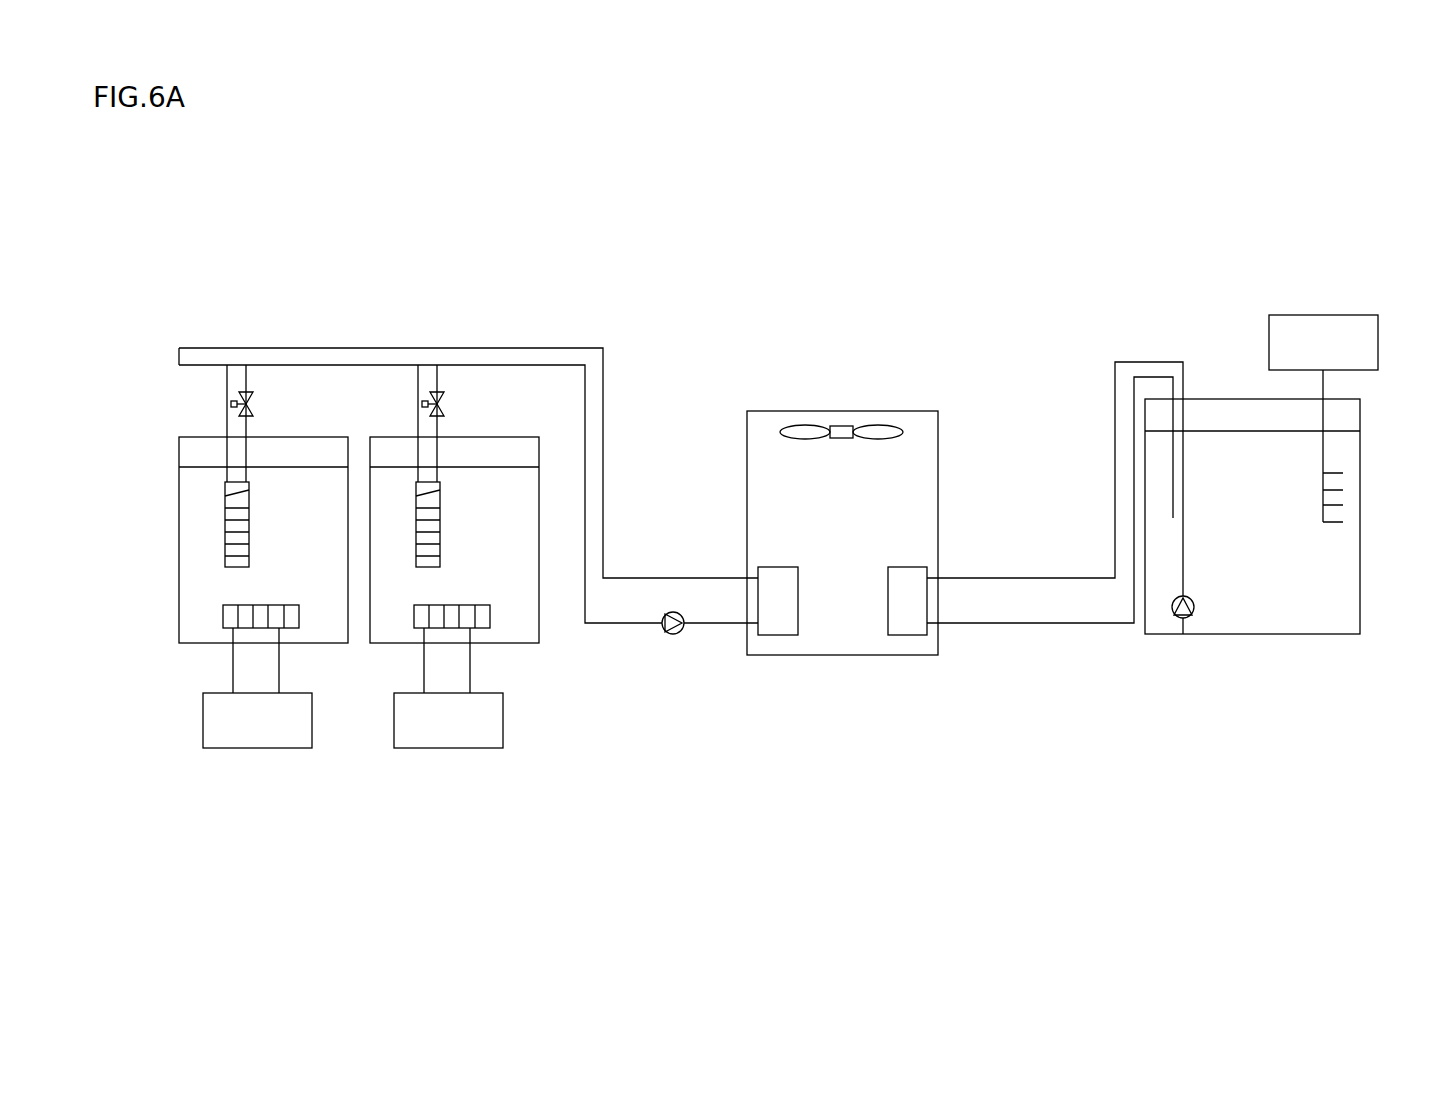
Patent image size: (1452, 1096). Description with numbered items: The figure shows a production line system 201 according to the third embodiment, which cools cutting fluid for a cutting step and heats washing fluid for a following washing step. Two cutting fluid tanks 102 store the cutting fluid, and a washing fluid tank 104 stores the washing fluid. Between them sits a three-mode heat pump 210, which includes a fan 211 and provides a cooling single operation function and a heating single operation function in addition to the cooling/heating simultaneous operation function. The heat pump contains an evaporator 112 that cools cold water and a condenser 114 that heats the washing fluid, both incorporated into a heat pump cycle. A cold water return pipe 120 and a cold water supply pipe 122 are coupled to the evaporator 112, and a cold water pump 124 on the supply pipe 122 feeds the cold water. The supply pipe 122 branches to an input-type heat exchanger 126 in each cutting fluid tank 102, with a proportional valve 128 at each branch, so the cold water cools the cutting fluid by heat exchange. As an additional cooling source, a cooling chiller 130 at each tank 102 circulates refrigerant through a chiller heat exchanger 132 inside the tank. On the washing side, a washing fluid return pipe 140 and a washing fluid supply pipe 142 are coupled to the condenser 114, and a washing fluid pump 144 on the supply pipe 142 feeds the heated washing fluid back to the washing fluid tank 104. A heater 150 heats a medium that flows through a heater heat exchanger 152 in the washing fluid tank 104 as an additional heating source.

The production line system 201 is at (252, 226).
The cutting fluid tank 102 is at (333, 644).
The washing fluid tank 104 is at (1330, 636).
The evaporator 112 is at (777, 636).
The condenser 114 is at (908, 636).
The cold water return pipe 120 is at (683, 578).
The cold water supply pipe 122 is at (617, 628).
The cold water pump 124 is at (683, 635).
The heat exchanger 126 is at (225, 527).
The proportional valve 128 is at (252, 405).
The cooling chiller 130 is at (258, 750).
The chiller heat exchanger 132 is at (223, 612).
The washing fluid return pipe 140 is at (1030, 626).
The washing fluid supply pipe 142 is at (1023, 578).
The washing fluid pump 144 is at (1187, 622).
The heater 150 is at (1325, 315).
The heater heat exchanger 152 is at (1325, 472).
The 3-mode heat pump 210 is at (773, 406).
The fan 211 is at (903, 428).